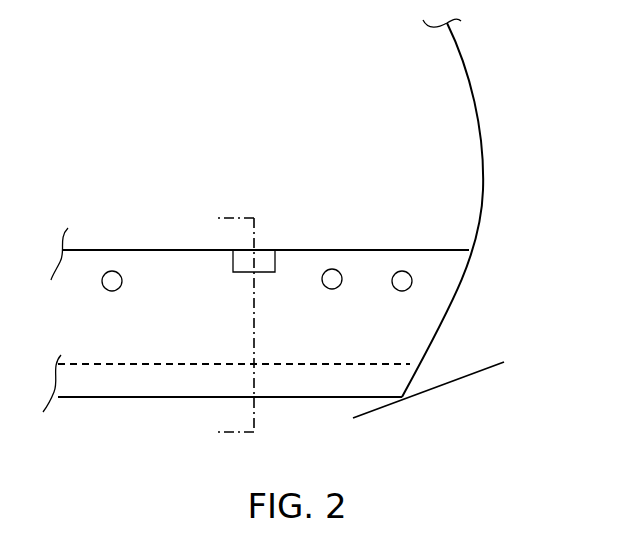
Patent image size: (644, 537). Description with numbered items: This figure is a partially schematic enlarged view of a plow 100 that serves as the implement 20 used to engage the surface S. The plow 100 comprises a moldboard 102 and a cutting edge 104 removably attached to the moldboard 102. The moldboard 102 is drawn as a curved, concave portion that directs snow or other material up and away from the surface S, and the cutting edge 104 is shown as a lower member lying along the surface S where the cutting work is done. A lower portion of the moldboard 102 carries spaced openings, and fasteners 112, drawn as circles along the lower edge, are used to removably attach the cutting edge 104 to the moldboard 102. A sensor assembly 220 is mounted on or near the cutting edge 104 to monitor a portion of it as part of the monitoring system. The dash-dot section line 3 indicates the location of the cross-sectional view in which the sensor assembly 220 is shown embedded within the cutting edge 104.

The implement 20 is at (511, 117).
The moldboard 102 is at (463, 170).
The plow 100 is at (412, 298).
The sensor assembly 220 is at (262, 249).
The fasteners 112 is at (108, 270).
The cutting edge 104 is at (110, 383).
The surface S is at (466, 372).
The section line 3- 3 is at (198, 218).